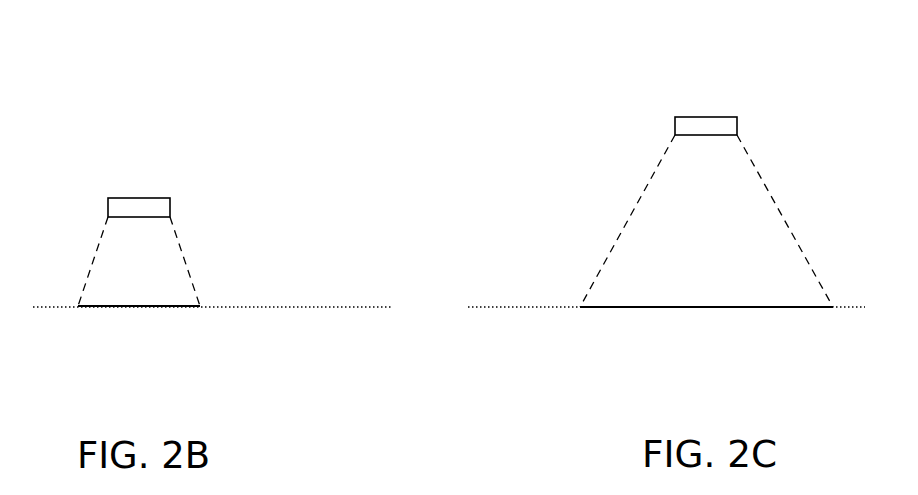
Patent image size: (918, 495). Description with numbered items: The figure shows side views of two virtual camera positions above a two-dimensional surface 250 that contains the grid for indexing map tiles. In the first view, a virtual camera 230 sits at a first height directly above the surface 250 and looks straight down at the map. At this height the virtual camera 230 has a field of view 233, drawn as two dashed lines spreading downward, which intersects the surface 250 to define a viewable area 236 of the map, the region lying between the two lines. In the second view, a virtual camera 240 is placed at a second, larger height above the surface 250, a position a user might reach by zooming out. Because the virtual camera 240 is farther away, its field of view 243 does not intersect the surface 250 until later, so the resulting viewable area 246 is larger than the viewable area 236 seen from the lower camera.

In FIG. 2B, the virtual camera 230 is at (148, 208).
In FIG. 2B, the field of view 233 is at (182, 240).
In FIG. 2B, the viewable area 236 is at (155, 307).
In FIG. 2C, the virtual camera 240 is at (708, 125).
In FIG. 2C, the field of view 243 is at (632, 210).
In FIG. 2C, the viewable area 246 is at (722, 307).
In FIG. 2B, the 2D surface 250 is at (490, 307).